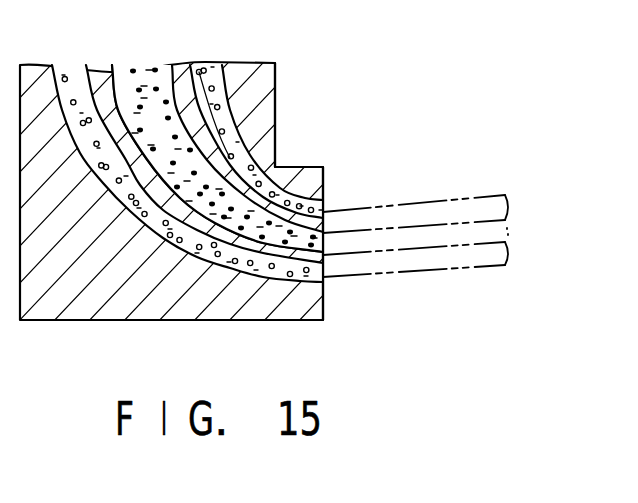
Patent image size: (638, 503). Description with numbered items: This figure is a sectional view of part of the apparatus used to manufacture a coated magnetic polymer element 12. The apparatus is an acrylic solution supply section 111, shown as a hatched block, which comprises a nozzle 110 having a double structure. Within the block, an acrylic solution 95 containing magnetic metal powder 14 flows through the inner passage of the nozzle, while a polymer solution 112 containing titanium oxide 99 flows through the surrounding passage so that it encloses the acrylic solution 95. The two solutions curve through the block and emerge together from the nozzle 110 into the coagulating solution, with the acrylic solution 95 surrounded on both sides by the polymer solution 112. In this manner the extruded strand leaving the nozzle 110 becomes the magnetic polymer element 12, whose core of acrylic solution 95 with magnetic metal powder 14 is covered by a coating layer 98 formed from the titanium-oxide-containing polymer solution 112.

The magnetic polymer element 12 is at (457, 288).
The magnetic metal powder 14 is at (153, 108).
The acrylic solution 95 is at (118, 80).
The coating layer 98 is at (488, 197).
The titanium oxide 99 is at (226, 37).
The nozzle 110 is at (323, 196).
The acrylic solution supply section 111 is at (287, 96).
The polymer solution 112 is at (198, 69).